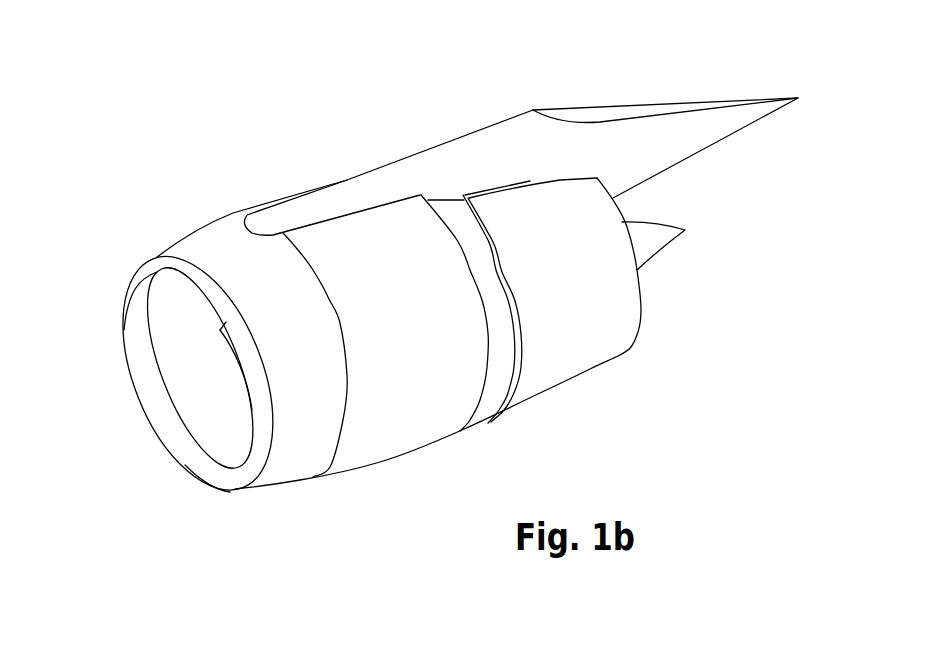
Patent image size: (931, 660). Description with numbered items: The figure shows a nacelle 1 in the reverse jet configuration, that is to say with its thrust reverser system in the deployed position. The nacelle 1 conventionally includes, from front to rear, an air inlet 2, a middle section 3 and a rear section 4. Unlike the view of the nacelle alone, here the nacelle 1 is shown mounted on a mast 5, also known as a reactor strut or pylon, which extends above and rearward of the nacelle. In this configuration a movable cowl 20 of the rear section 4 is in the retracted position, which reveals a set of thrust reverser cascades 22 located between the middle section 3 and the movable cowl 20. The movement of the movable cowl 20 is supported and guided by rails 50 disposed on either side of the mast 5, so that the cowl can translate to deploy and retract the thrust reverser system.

The nacelle 1 is at (109, 434).
The air inlet 2 is at (178, 254).
The middle section 3 is at (413, 474).
The rear section 4 is at (613, 396).
The mast 5 is at (676, 142).
The movable cowl 20 is at (604, 332).
The thrust reverser cascades 22 is at (495, 373).
The rails 50 is at (446, 189).